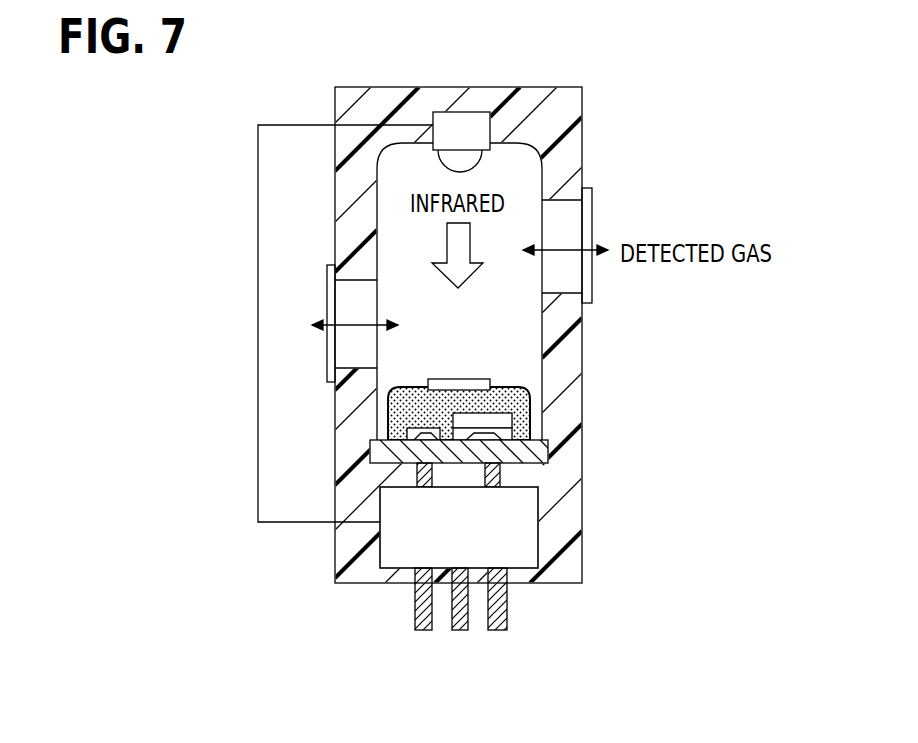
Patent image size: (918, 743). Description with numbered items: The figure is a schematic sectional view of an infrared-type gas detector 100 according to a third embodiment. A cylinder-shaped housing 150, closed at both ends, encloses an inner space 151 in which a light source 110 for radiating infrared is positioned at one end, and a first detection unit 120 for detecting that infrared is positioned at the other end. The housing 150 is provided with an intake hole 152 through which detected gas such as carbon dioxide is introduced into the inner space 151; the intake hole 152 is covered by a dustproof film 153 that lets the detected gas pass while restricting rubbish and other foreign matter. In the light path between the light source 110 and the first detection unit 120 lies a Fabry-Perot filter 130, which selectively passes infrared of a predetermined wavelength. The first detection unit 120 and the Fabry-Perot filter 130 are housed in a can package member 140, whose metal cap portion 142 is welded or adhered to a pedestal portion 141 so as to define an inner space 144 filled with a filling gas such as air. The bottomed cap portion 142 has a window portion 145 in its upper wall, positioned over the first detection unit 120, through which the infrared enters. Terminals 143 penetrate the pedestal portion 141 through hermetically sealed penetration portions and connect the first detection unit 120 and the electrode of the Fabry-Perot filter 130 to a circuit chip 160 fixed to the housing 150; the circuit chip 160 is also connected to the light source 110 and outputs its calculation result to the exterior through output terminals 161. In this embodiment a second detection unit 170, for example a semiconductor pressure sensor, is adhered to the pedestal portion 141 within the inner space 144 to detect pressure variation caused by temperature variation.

The infrared-type gas detector 100 is at (629, 82).
The light source 110 is at (467, 127).
The first detection unit 120 is at (498, 434).
The Fabry-Perot filter 130 is at (498, 418).
The can package member 140 is at (465, 411).
The pedestal portion 141 is at (372, 451).
The cap portion 142 is at (505, 380).
The terminals 143 is at (503, 475).
The inner space 144 is at (415, 400).
The window portion 145 is at (460, 386).
The housing 150 is at (347, 213).
The inner space 151 is at (541, 166).
The intake hole 152 is at (562, 278).
The dustproof film 153 is at (587, 228).
The circuit chip 160 is at (527, 530).
The output terminals 161 is at (415, 604).
The second detection unit 170 is at (410, 437).